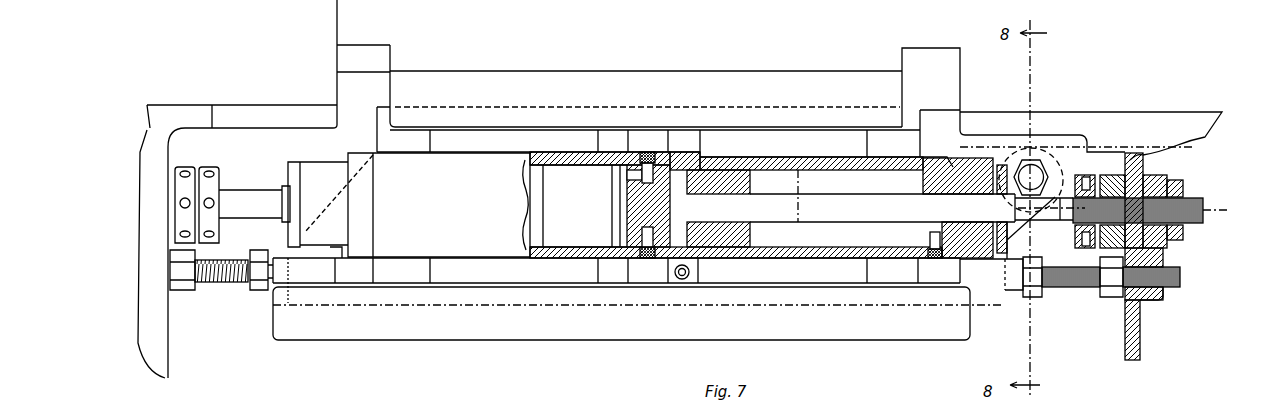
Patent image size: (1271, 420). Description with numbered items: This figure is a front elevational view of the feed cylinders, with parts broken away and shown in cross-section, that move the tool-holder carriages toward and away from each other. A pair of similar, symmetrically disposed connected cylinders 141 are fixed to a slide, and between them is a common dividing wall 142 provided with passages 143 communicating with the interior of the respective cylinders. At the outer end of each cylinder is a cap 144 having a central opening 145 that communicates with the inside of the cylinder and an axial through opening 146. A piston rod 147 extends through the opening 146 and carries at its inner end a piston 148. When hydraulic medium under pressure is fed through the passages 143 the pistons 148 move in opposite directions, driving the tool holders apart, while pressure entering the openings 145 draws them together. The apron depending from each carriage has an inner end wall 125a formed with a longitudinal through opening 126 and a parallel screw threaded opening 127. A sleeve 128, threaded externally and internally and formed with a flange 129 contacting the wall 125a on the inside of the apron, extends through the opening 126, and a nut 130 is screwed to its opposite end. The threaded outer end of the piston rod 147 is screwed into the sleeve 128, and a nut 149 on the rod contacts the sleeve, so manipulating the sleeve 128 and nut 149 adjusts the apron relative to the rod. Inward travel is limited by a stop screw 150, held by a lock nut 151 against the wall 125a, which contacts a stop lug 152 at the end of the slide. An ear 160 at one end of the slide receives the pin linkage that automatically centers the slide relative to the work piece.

The cylinders 141 is at (805, 100).
The common dividing wall 142 is at (640, 202).
The passages 143 is at (648, 150).
The cap 144 is at (975, 177).
The central opening 145 is at (938, 260).
The axial through opening 146 is at (950, 194).
The piston rod 147 is at (867, 202).
The piston 148 is at (718, 183).
The nut 149 is at (1080, 172).
The stop screw 150 is at (1071, 288).
The lock nut 151 is at (1107, 291).
The stop lugs 152 is at (1017, 291).
The ear 160 is at (1040, 152).
The inner end wall 125a is at (1123, 340).
The longitudinal through opening 126 is at (1142, 166).
The screw threaded opening 127 is at (1148, 298).
The sleeve 128 is at (1183, 190).
The flange 129 is at (1180, 190).
The nut 130 is at (1112, 175).